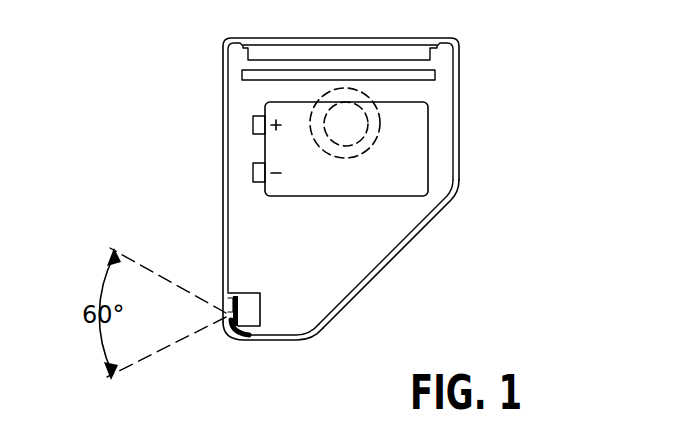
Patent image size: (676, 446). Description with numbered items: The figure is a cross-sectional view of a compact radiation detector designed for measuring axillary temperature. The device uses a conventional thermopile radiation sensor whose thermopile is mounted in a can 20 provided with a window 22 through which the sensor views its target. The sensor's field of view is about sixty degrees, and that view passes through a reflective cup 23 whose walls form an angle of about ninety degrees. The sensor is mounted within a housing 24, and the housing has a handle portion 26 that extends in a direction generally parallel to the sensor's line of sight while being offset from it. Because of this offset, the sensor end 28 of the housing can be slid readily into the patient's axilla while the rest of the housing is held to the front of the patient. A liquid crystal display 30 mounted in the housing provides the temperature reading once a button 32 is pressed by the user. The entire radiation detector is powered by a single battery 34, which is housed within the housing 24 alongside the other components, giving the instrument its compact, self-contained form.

The can 20 is at (248, 327).
The window 22 is at (224, 319).
The reflective cup 23 is at (224, 306).
The housing 24 is at (415, 233).
The handle portion 26 is at (458, 52).
The sensor end 28 is at (332, 315).
The liquid crystal display 30 is at (363, 44).
The button 32 is at (367, 138).
The battery 34 is at (316, 197).